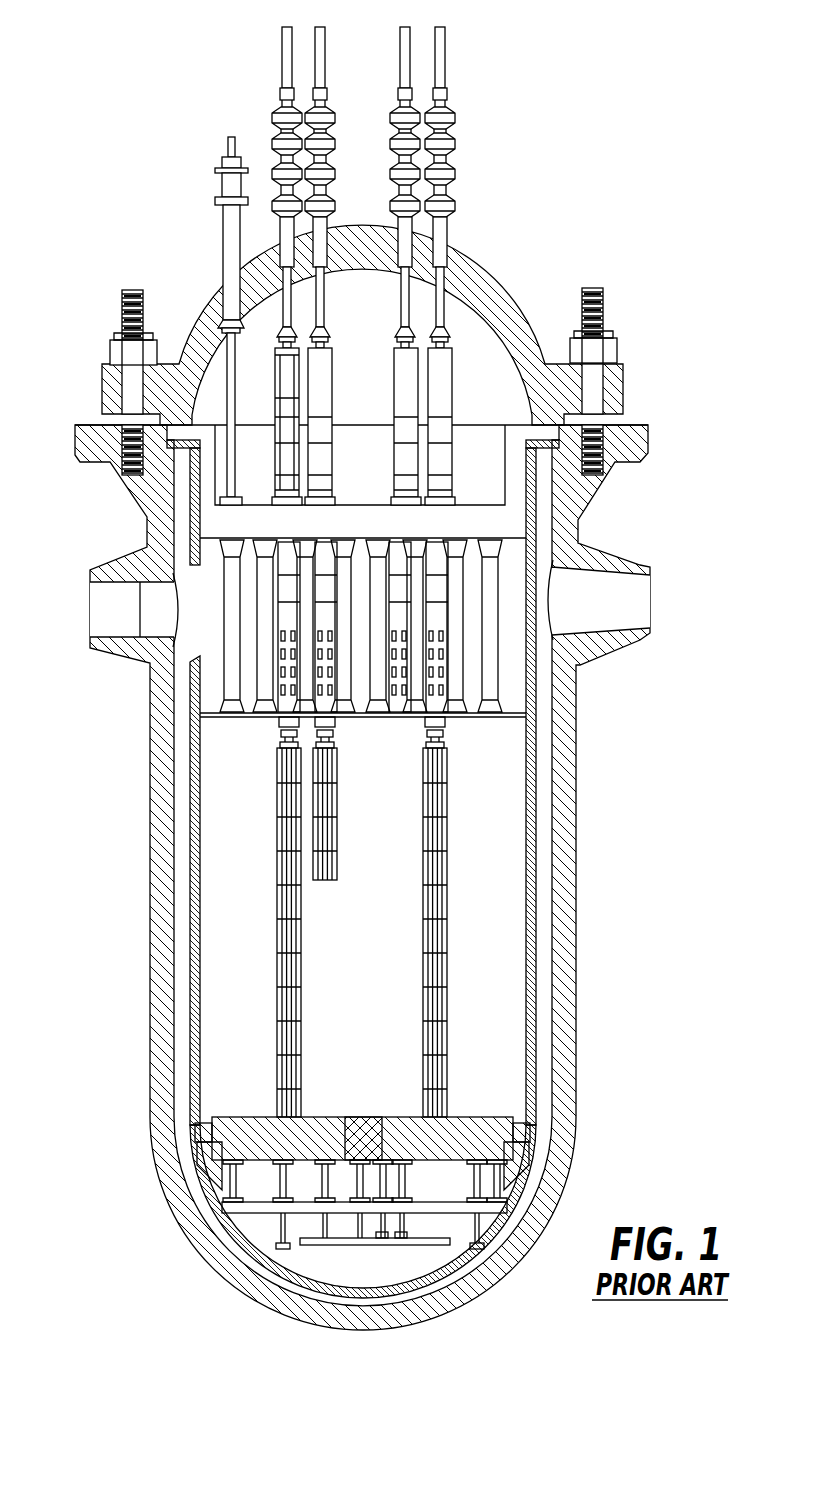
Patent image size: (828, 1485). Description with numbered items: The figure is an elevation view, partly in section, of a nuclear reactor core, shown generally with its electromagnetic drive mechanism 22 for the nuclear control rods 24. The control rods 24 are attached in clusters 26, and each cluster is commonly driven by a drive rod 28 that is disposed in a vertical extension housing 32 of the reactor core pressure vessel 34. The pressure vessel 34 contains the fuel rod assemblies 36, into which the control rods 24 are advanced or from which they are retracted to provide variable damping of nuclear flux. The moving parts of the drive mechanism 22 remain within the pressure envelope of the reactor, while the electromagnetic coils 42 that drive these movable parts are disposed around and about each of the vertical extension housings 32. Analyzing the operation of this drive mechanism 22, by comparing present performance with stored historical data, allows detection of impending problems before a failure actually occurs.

The electromagnetic drive mechanism 22 is at (466, 95).
The electromagnetic coils 42 is at (443, 172).
The vertical extension housing 32 is at (285, 231).
The clusters 26 is at (274, 403).
The drive rod 28 is at (443, 312).
The nuclear control rods 24 is at (337, 763).
The fuel rod assemblies 36 is at (327, 806).
The reactor core pressure vessel 34 is at (576, 988).